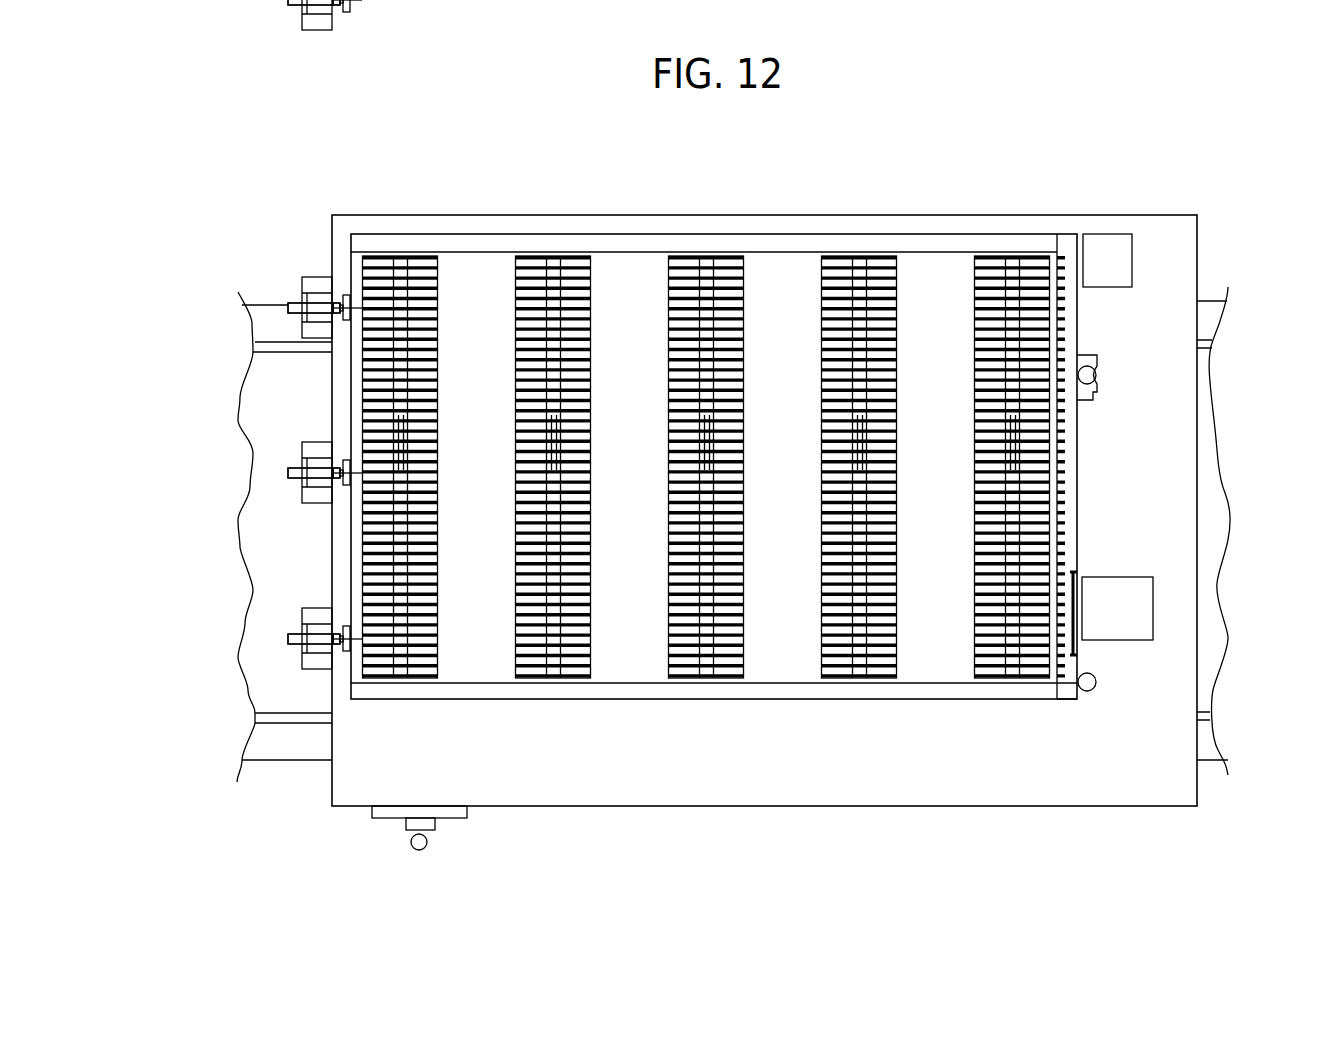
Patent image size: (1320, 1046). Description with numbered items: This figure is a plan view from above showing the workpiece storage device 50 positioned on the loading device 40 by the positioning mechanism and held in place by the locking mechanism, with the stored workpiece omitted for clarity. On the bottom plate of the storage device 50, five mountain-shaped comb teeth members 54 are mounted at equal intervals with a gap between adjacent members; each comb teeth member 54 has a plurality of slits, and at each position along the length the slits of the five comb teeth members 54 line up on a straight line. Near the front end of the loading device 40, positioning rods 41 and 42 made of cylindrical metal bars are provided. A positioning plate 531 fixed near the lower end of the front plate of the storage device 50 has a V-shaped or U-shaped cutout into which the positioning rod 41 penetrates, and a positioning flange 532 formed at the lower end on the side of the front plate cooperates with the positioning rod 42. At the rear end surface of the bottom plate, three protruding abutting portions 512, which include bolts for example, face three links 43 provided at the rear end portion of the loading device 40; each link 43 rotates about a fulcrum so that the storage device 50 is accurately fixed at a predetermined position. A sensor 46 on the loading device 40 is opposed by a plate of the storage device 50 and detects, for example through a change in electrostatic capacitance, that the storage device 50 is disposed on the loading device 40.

The loading device 40 is at (567, 800).
The positioning rod 41 is at (1097, 372).
The positioning rod 42 is at (1097, 680).
The link 43 is at (304, 323).
The sensor 46 is at (1115, 583).
The storage device 50 is at (481, 694).
The comb teeth member 54 is at (423, 662).
The abutting portion 512 is at (338, 314).
The positioning plate 531 is at (1093, 400).
The positioning flange 532 is at (1068, 695).